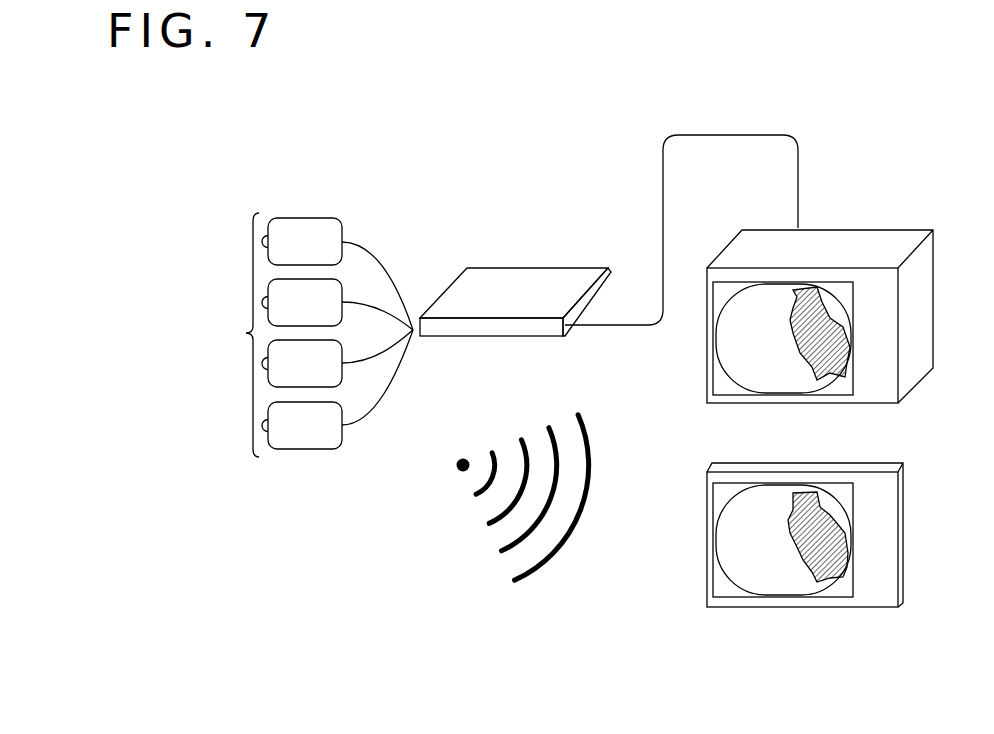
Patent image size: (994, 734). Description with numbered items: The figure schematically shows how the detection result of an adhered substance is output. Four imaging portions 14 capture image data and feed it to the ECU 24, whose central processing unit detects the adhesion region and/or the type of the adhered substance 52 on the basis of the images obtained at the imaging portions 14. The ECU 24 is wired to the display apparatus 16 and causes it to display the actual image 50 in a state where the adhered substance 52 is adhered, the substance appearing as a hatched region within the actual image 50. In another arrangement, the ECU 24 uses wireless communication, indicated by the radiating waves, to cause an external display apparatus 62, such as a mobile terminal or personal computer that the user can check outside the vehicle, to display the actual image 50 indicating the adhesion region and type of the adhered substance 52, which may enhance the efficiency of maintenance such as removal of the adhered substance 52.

The imaging portions 14 is at (194, 335).
The ECU 24 is at (507, 267).
The display apparatus 16 is at (895, 235).
The actual image 50 is at (753, 308).
The adhered substance 52 is at (830, 330).
The external display apparatus 62 is at (883, 593).